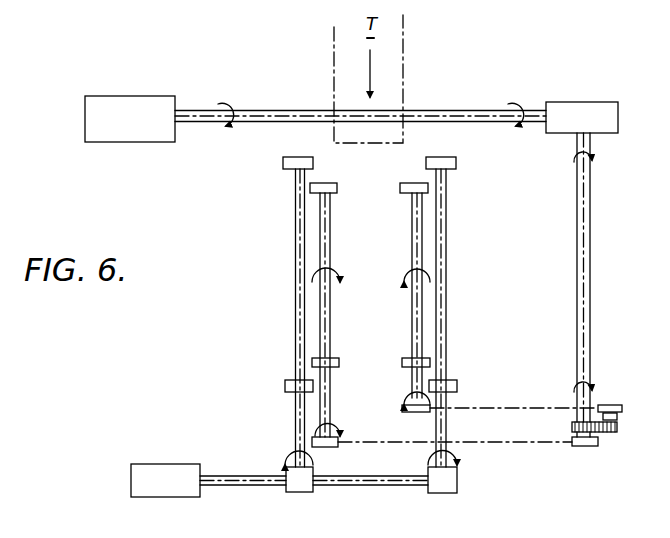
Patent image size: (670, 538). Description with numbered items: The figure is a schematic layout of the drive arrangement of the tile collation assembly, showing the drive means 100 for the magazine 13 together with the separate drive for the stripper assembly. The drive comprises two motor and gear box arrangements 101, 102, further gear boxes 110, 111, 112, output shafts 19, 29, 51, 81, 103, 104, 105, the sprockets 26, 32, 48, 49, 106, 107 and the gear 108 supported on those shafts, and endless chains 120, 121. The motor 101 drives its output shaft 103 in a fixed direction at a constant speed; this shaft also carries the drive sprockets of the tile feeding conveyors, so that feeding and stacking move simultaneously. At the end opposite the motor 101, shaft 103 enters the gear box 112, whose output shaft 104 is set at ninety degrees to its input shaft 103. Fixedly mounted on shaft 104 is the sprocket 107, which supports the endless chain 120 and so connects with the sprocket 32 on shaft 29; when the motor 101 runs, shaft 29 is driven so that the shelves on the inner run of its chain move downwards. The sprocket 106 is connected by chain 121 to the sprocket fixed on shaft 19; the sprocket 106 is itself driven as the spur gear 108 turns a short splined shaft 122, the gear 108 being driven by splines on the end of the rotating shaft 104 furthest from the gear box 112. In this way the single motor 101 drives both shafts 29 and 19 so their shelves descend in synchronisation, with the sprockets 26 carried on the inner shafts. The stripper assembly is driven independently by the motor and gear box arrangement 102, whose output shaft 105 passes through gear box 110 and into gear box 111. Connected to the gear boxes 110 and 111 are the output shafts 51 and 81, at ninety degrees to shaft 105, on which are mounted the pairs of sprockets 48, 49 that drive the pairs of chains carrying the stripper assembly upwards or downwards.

The magazine 13 is at (374, 295).
The shaft 19 is at (413, 240).
The sprockets 26 is at (400, 190).
The shaft 29 is at (322, 211).
The sprocket 32 is at (402, 410).
The sprockets 48 is at (285, 386).
The sprockets 49 is at (283, 163).
The shaft 51 is at (297, 255).
The shaft 81 is at (447, 248).
The drive means 100 is at (558, 84).
The motor and gear box arrangement 101 is at (125, 100).
The motor and gear box arrangement 102 is at (183, 466).
The output shaft 103 is at (432, 110).
The output shaft 104 is at (588, 245).
The output shaft 105 is at (364, 486).
The sprocket 106 is at (607, 405).
The sprocket 107 is at (583, 447).
The spur gear 108 is at (616, 432).
The gear box 110 is at (297, 493).
The gear box 111 is at (445, 494).
The gear box 112 is at (576, 106).
The endless chain 120 is at (505, 446).
The endless chain 121 is at (550, 408).
The splined shaft 122 is at (617, 418).